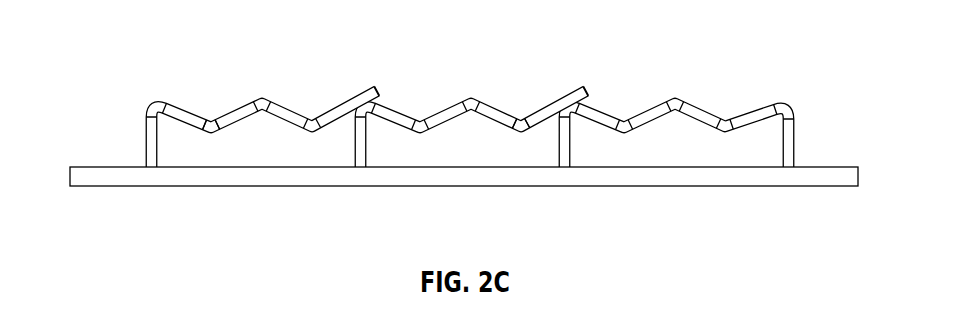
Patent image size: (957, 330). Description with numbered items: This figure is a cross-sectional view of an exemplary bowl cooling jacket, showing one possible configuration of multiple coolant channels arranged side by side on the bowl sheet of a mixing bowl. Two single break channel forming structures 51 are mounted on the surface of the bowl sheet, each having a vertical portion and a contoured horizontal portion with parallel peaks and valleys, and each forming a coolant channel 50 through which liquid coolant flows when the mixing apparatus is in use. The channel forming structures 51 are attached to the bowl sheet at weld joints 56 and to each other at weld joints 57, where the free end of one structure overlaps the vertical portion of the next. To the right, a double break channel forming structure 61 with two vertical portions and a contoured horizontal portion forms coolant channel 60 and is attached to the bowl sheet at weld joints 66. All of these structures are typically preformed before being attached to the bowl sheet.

The coolant channel 50 is at (381, 132).
The single break channel forming structure 51 is at (187, 89).
The weld joints 56 is at (152, 168).
The weld joints 57 is at (379, 100).
The coolant channel 60 is at (662, 139).
The double break channel forming structure 61 is at (735, 104).
The weld joints 66 is at (565, 168).